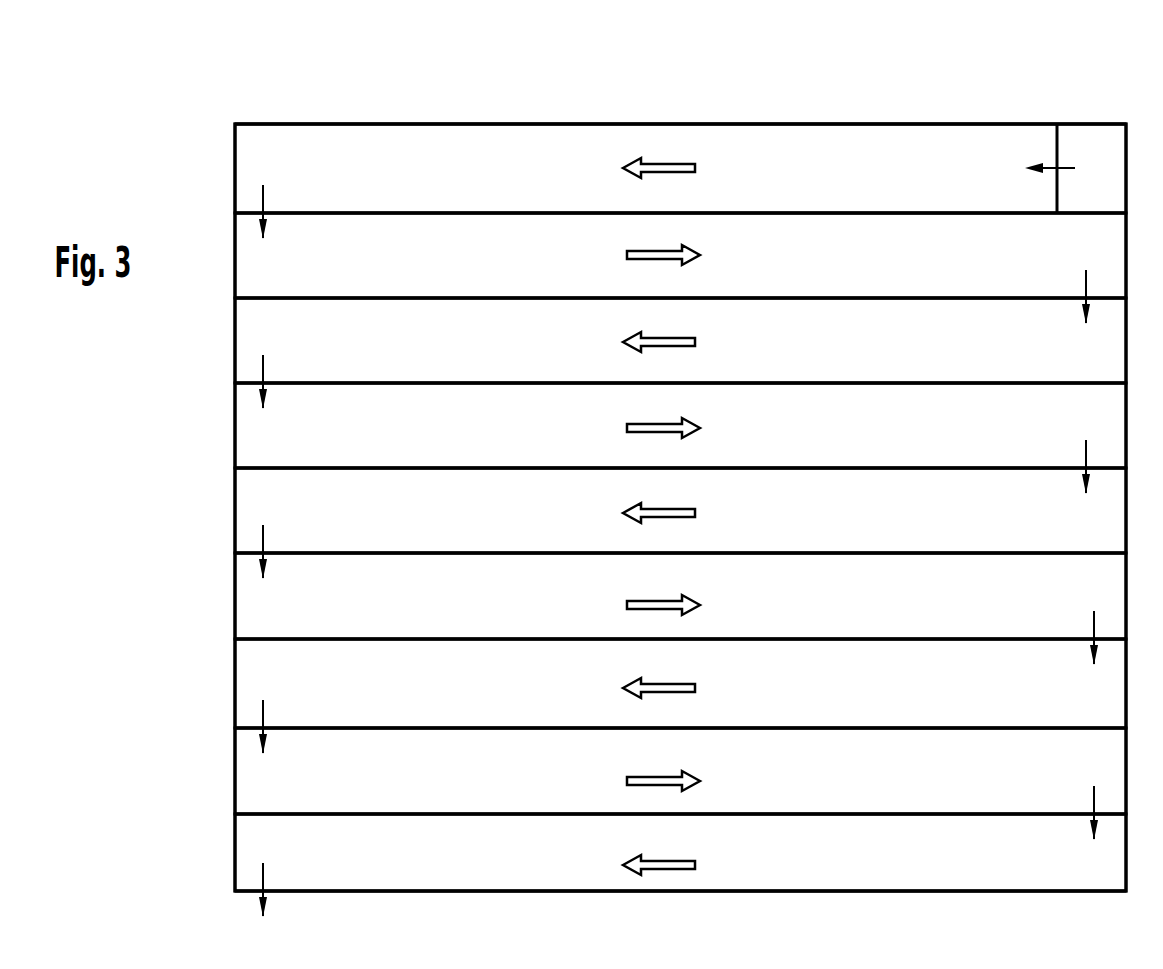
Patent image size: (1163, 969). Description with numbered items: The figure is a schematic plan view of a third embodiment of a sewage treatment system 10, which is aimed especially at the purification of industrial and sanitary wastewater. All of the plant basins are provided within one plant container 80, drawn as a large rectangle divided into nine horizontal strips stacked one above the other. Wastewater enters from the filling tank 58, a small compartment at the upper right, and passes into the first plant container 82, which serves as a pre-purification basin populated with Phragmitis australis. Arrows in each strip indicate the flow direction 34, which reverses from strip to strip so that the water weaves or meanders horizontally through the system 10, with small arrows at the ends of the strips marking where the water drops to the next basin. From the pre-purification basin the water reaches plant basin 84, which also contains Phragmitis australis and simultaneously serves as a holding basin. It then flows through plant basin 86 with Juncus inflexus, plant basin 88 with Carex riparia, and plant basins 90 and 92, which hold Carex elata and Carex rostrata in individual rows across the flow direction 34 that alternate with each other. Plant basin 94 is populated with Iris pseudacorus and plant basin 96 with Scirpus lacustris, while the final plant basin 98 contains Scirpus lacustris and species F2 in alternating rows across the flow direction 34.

The sewage treatment system 10 is at (904, 121).
The flow direction 34 is at (656, 164).
The filling tank 58 is at (1115, 182).
The plant container 80 is at (234, 425).
The first plant container 82 is at (806, 184).
The plant basin 84 is at (806, 271).
The plant basin 86 is at (806, 358).
The plant basin 88 is at (806, 444).
The plant basin 90 is at (806, 529).
The plant basin 92 is at (806, 621).
The plant basin 94 is at (806, 704).
The plant basin 96 is at (806, 797).
The plant basin 98 is at (806, 881).